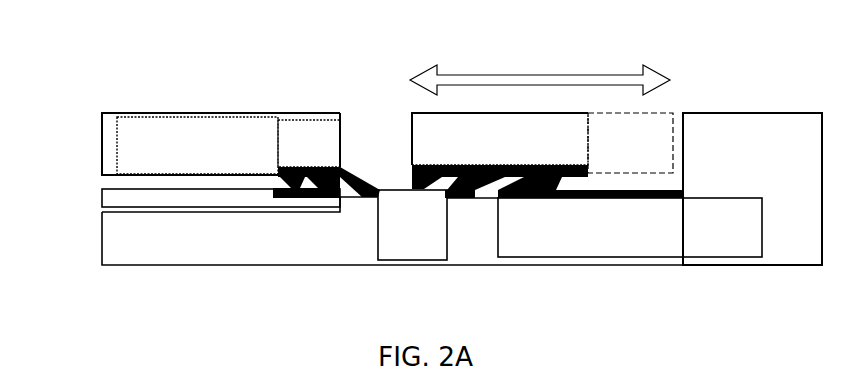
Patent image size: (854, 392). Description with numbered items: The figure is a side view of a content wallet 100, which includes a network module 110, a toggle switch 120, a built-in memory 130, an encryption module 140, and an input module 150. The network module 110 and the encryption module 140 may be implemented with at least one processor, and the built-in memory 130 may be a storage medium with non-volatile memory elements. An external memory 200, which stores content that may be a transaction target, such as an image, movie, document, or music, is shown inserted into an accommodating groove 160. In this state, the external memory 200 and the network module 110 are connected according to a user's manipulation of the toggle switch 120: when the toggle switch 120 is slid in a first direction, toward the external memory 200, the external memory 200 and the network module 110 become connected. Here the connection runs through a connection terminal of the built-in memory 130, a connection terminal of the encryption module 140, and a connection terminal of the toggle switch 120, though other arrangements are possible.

The content wallet 100 is at (371, 78).
The network module 110 is at (698, 257).
The toggle switch 120 is at (410, 123).
The built-in memory 130 is at (310, 120).
The encryption module 140 is at (415, 260).
The input module 150 is at (173, 113).
The accommodating groove 160 is at (92, 215).
The external memory 200 is at (102, 199).